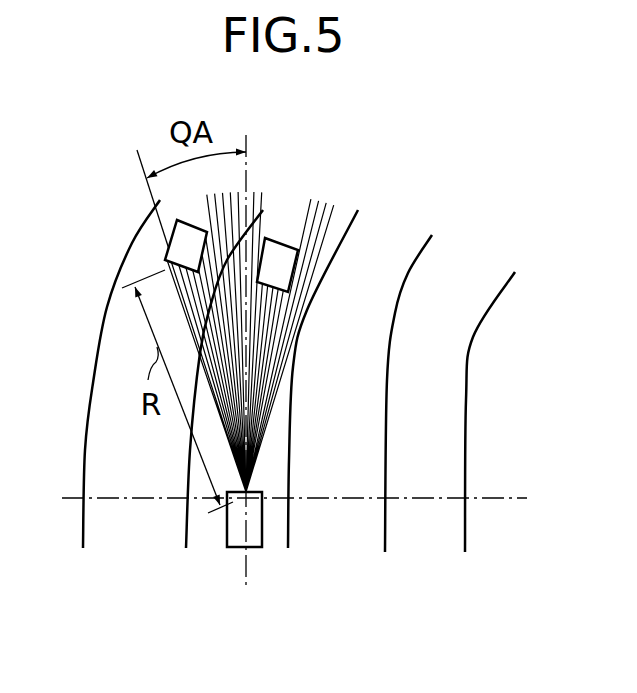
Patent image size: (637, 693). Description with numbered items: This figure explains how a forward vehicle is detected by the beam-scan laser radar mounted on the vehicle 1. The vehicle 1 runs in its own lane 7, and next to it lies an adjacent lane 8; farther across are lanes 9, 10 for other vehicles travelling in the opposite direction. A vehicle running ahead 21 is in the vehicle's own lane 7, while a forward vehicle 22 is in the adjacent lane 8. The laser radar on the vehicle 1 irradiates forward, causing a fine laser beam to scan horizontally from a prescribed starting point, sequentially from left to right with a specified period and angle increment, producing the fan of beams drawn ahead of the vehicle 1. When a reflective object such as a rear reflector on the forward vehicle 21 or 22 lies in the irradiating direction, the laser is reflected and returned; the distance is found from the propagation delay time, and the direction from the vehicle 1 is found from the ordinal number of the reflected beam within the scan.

The vehicle 1 is at (261, 547).
The vehicle's own lane 7 is at (210, 537).
The adjacent lane 8 is at (120, 537).
The lane for oncoming vehicles 9 is at (367, 537).
The lane for oncoming vehicles 10 is at (455, 537).
The vehicle running ahead 21 is at (272, 238).
The forward vehicle in adjacent lane 22 is at (165, 255).